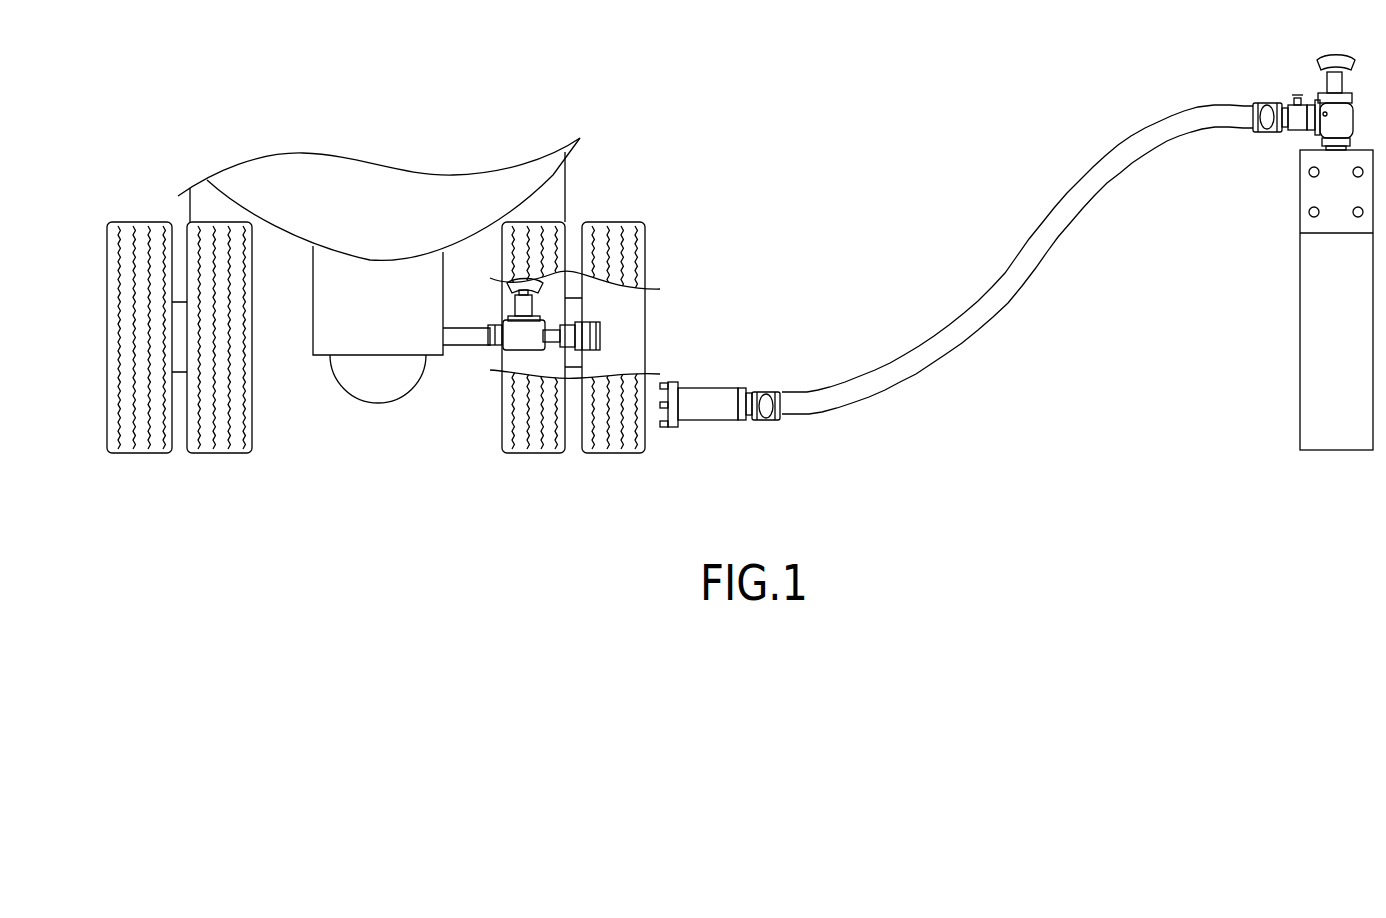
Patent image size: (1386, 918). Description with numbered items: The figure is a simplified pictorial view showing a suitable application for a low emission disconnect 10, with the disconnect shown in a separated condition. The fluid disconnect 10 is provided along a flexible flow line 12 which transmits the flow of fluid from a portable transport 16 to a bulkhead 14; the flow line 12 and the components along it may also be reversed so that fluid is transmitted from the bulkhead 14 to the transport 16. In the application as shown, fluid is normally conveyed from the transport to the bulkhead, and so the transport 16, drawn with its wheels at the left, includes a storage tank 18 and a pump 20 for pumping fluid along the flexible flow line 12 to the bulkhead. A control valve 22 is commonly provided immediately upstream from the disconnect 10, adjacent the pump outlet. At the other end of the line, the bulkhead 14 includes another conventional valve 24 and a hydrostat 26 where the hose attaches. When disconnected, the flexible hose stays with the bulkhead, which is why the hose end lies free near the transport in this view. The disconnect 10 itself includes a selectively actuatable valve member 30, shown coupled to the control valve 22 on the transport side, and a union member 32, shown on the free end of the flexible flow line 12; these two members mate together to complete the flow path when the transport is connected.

The low emission disconnect 10 is at (990, 264).
The flexible flow line 12 is at (1053, 247).
The bulkhead 14 is at (1312, 302).
The portable transport 16 is at (423, 285).
The storage tank 18 is at (270, 195).
The pump 20 is at (363, 345).
The control valve 22 is at (520, 345).
The conventional valve 24 is at (1355, 103).
The hydrostat 26 is at (1293, 92).
The selectively actuatable valve member 30 is at (602, 335).
The union member 32 is at (706, 415).